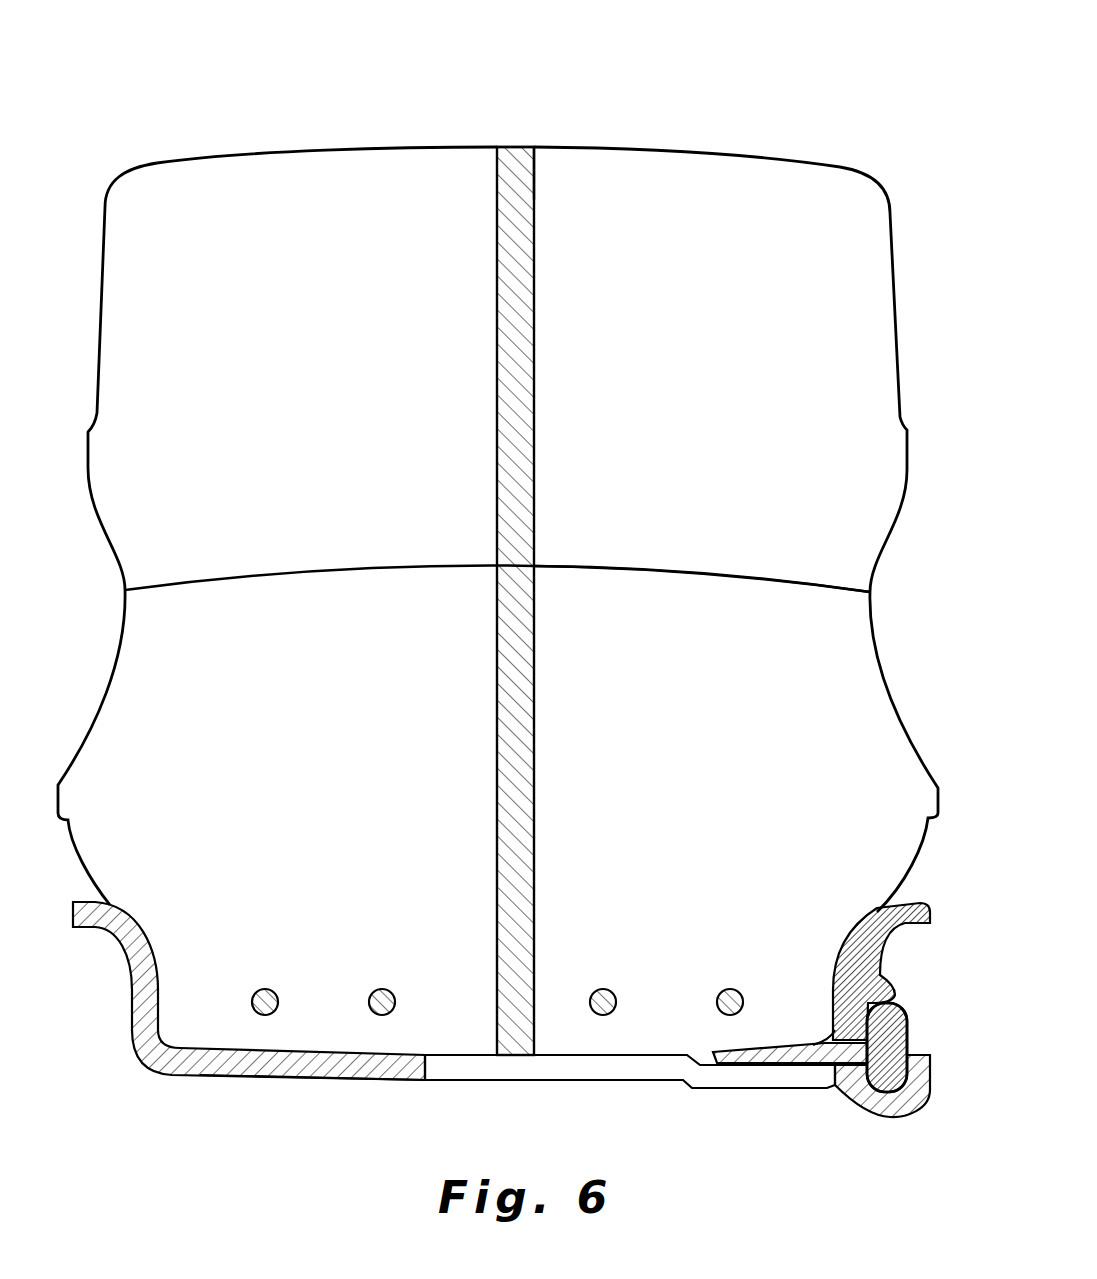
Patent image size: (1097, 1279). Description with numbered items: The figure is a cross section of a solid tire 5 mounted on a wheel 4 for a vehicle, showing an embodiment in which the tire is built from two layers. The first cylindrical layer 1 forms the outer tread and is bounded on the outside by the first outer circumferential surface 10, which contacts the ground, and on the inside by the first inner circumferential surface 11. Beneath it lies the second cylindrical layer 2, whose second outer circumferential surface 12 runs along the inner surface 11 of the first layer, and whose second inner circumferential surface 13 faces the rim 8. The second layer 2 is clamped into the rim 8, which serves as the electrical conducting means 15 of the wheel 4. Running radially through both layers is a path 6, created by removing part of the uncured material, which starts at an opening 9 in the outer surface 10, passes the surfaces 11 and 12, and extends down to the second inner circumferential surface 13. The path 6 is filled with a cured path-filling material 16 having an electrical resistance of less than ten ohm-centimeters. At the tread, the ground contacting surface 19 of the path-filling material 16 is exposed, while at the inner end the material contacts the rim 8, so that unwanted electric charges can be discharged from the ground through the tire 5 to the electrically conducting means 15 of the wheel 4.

The first cylindrical layer 1 is at (726, 290).
The second cylindrical layer 2 is at (719, 798).
The wheel 4 is at (103, 978).
The solid tire 5 is at (693, 78).
The path 6 is at (535, 268).
The rim 8 is at (285, 1067).
The opening 9 is at (535, 147).
The first outer circumferential surface 10 is at (677, 150).
The first inner circumferential surface 11 is at (653, 570).
The second outer circumferential surface 12 is at (653, 570).
The second inner circumferential surface 13 is at (745, 1050).
The electrical conducting means 15 is at (375, 1073).
The path-filling material 16 is at (518, 372).
The ground contacting surface 19 is at (512, 147).